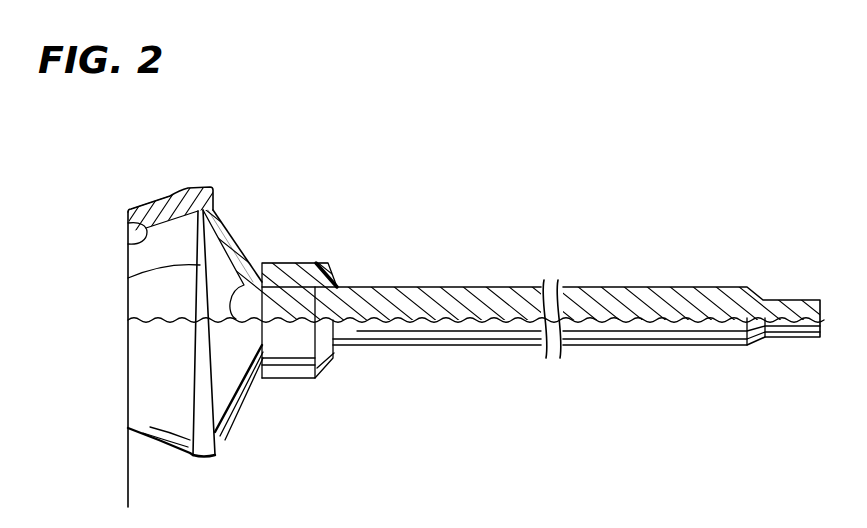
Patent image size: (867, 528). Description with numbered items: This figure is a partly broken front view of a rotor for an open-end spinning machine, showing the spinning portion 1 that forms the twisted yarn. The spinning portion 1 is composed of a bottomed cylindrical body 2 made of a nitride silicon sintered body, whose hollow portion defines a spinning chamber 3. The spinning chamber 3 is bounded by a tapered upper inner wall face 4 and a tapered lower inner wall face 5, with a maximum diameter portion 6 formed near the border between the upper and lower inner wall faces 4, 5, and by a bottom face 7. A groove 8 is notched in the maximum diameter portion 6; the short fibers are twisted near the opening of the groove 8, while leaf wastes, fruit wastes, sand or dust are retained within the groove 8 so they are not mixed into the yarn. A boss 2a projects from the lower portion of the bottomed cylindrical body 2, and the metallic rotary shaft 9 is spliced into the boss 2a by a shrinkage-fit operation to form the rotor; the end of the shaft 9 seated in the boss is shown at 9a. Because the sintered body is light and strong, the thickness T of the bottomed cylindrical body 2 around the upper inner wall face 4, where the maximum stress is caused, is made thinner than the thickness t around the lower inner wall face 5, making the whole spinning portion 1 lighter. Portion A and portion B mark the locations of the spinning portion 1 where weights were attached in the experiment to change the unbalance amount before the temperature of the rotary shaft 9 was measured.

The spinning portion 1 is at (115, 393).
The bottomed cylindrical body 2 is at (167, 403).
The boss 2a is at (337, 279).
The spinning chamber 3 is at (153, 299).
The upper inner wall face 4 is at (127, 233).
The lower inner wall face 5 is at (219, 207).
The maximum diameter portion 6 is at (183, 192).
The bottom face 7 is at (258, 262).
The groove 8 is at (128, 273).
The rotary shaft 9 is at (482, 347).
The end portion of shank 9a is at (318, 262).
The portion A is at (111, 363).
The portion B is at (215, 455).
The thickness T is at (172, 242).
The thickness t is at (212, 258).